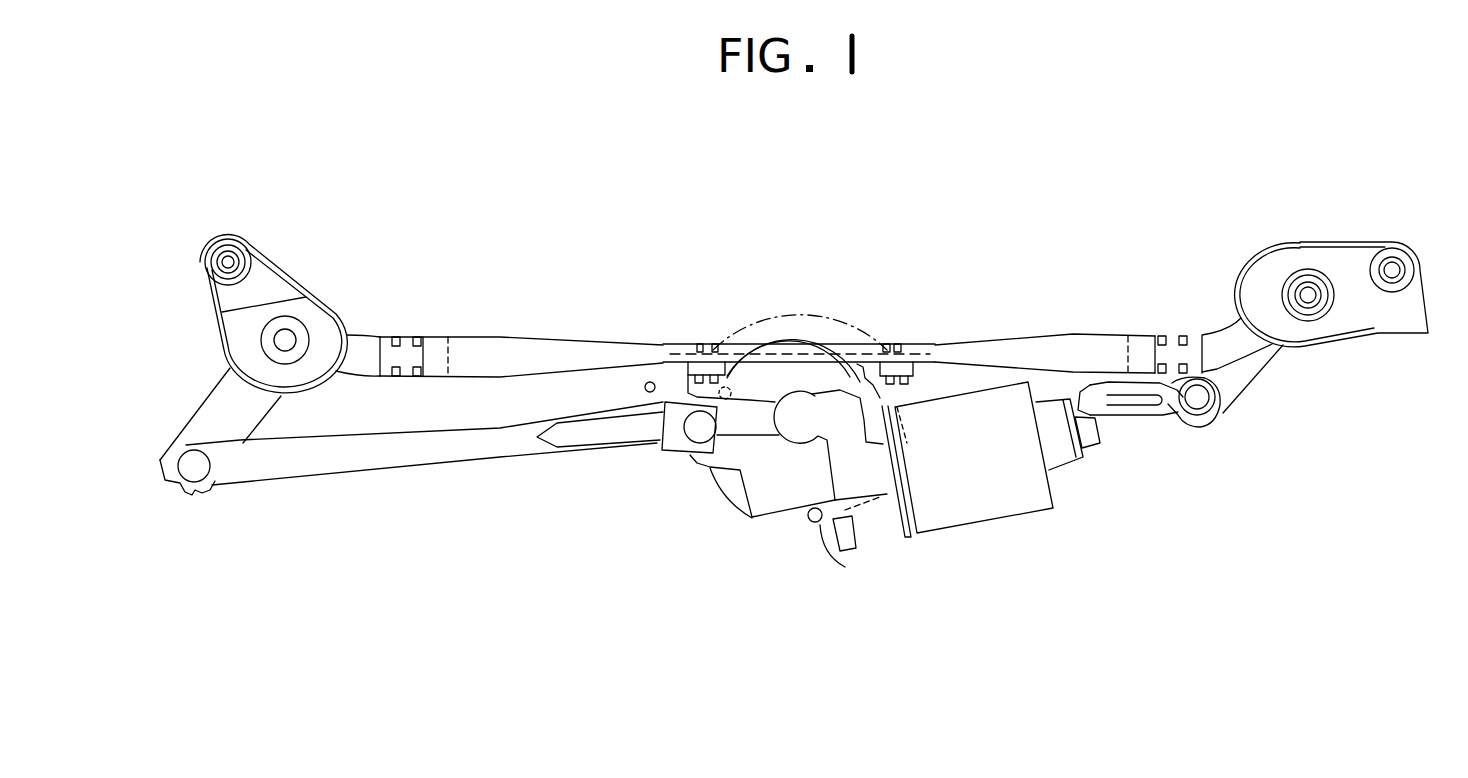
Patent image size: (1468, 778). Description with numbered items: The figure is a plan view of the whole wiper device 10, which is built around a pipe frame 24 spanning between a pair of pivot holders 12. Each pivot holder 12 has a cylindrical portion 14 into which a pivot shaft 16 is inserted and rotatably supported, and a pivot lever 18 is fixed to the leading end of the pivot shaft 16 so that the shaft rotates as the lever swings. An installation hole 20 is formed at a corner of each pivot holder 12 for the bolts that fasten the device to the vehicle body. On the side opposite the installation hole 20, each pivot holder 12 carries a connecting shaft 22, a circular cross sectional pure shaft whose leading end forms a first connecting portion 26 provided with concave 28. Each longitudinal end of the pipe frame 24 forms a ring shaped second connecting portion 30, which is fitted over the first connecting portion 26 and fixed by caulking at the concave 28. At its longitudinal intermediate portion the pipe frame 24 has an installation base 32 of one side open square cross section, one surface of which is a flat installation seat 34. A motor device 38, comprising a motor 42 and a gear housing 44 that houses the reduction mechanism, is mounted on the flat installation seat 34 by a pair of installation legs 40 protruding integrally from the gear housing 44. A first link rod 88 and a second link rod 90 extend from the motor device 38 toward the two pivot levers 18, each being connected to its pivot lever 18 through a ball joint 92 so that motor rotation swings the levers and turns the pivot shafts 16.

The wiper device 10 is at (793, 288).
The pivot holder 12 is at (310, 284).
The cylindrical portion 14 is at (310, 333).
The pivot shaft 16 is at (273, 340).
The pivot lever 18 is at (197, 418).
The installation hole 20 is at (229, 262).
The connecting shaft 22 is at (367, 377).
The pipe frame 24 is at (512, 333).
The first connecting portion 26 is at (433, 353).
The concave 28 is at (397, 377).
The second connecting portion 30 is at (388, 340).
The installation base 32 is at (834, 311).
The flat installation seat 34 is at (923, 345).
The motor device 38 is at (894, 498).
The installation leg 40 is at (687, 368).
The motor 42 is at (927, 537).
The gear housing 44 is at (822, 520).
The first link rod 88 is at (445, 460).
The second link rod 90 is at (1128, 417).
The ball joint 92 is at (192, 473).